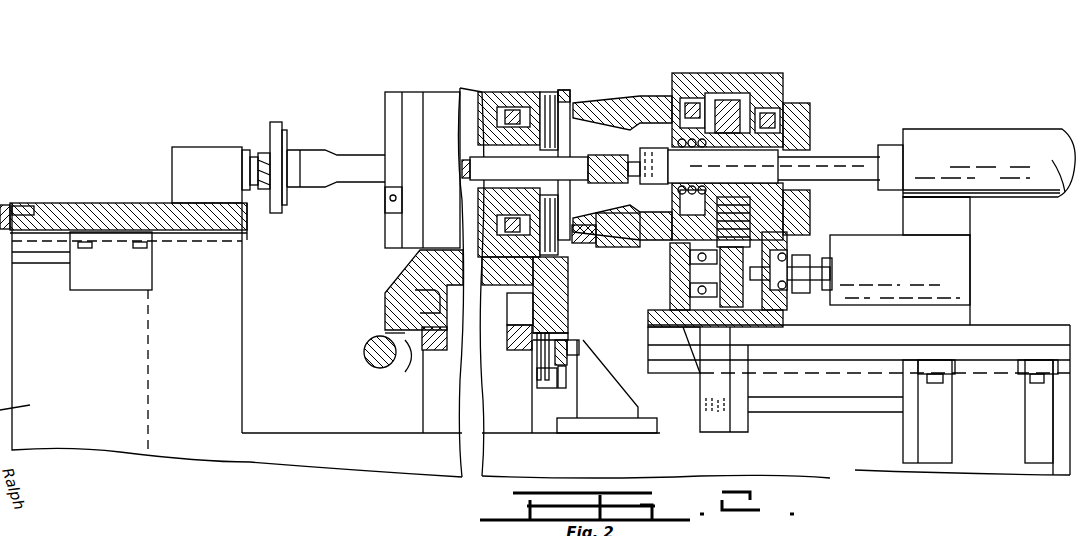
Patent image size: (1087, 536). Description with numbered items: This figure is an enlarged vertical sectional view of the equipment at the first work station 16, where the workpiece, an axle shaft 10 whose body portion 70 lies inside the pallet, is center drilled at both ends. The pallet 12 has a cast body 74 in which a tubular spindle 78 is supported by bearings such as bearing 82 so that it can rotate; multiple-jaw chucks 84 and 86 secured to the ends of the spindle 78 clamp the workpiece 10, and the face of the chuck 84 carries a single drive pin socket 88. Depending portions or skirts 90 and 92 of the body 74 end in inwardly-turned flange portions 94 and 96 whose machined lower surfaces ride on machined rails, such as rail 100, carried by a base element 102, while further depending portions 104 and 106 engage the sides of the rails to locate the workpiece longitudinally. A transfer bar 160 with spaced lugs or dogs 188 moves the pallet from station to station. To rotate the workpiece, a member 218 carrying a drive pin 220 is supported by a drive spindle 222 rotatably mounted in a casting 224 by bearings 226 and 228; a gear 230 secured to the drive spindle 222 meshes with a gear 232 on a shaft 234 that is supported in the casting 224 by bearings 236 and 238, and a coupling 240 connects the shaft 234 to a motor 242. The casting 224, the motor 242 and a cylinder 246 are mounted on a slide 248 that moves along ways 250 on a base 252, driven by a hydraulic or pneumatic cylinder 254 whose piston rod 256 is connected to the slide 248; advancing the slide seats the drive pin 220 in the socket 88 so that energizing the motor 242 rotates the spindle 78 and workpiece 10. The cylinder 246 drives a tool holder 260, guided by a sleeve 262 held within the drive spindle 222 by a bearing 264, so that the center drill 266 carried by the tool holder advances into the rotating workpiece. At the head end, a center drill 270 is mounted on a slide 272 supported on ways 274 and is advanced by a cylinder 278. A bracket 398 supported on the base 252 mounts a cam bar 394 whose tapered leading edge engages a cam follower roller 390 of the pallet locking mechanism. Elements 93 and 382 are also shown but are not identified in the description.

The axle shaft 10 is at (363, 193).
The pallet 12 is at (468, 74).
The first work station 16 is at (957, 60).
The body portion 70 is at (360, 160).
The body 74 is at (490, 274).
The tubular spindle 78 is at (486, 112).
The bearing 82 is at (542, 108).
The multiple-jaw chuck 84 is at (570, 95).
The multiple-jaw chuck 86 is at (385, 112).
The drive pin socket 88 is at (578, 222).
The depending portion 90 is at (560, 300).
The depending portion 92 is at (396, 294).
The clamp jaw 93 is at (556, 322).
The flange portion 94 is at (520, 315).
The flange portion 96 is at (420, 305).
The machined rail 100 is at (432, 352).
The base element 102 is at (430, 408).
The depending portion 104 is at (568, 337).
The depending portion 106 is at (385, 363).
The transfer bar 160 is at (365, 353).
The transfer dog 188 is at (385, 333).
The member 218 is at (632, 96).
The drive pin 220 is at (598, 242).
The drive spindle 222 is at (770, 120).
The casting 224 is at (740, 135).
The bearing 226 is at (700, 110).
The bearing 228 is at (800, 103).
The gear 230 is at (783, 208).
The gear 232 is at (735, 300).
The shaft 234 is at (755, 285).
The bearing 236 is at (698, 298).
The bearing 238 is at (833, 288).
The coupling 240 is at (830, 265).
The motor 242 is at (963, 276).
The cylinder 246 is at (968, 133).
The slide 248 is at (1003, 325).
The ways 250 is at (1030, 345).
The base 252 is at (866, 462).
The hydraulic cylinder 254 is at (965, 428).
The piston rod 256 is at (795, 408).
The tool holder 260 is at (775, 178).
The sleeve 262 is at (642, 152).
The bearing 264 is at (662, 138).
The center drill 266 is at (525, 168).
The center drill 270 is at (272, 150).
The slide 272 is at (95, 205).
The ways 274 is at (36, 215).
The cylinder 278 is at (92, 275).
The pin 382 is at (542, 360).
The cam follower roller 390 is at (555, 388).
The cam bar 394 is at (580, 350).
The bracket 398 is at (600, 405).